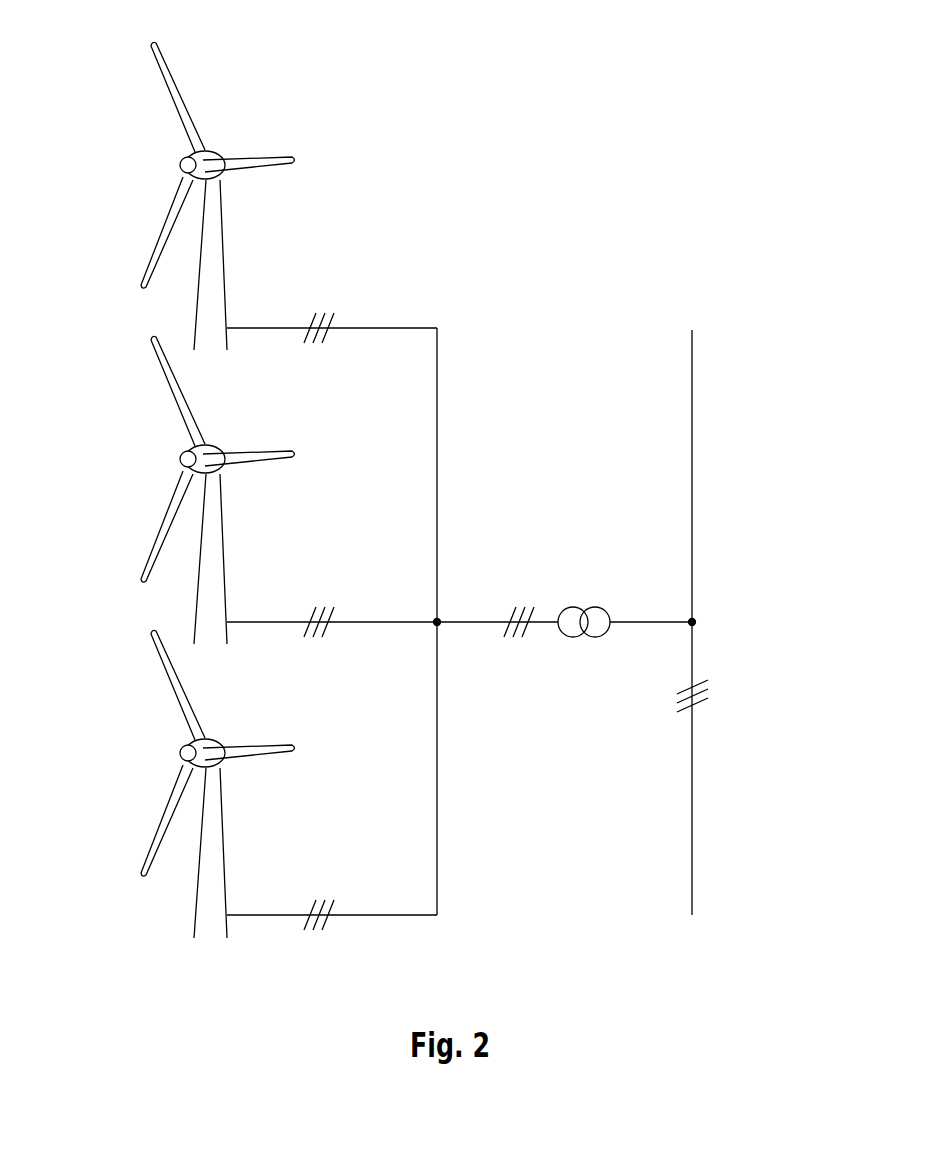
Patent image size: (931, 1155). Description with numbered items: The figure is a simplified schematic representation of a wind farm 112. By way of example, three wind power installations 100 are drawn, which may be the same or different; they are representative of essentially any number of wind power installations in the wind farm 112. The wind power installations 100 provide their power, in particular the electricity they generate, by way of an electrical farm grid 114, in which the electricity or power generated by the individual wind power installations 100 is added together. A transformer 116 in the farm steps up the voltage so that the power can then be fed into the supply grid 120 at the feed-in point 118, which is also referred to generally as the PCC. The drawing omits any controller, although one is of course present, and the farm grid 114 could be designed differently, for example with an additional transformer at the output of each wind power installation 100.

The wind power installation 100 is at (215, 250).
The wind farm 112 is at (513, 158).
The electrical farm grid 114 is at (458, 620).
The transformer 116 is at (588, 596).
The feed-in point 118 is at (706, 601).
The supply grid 120 is at (694, 360).